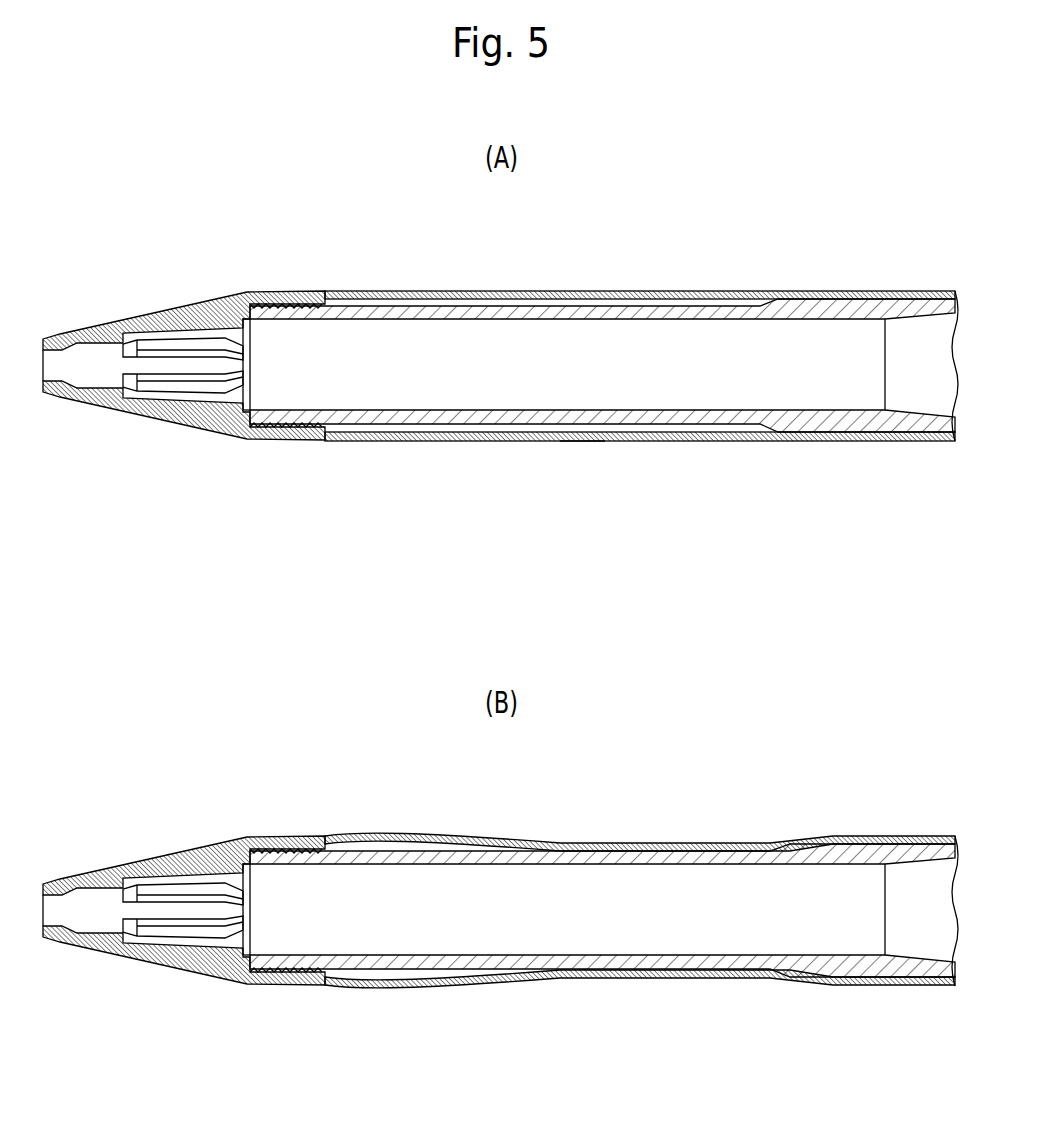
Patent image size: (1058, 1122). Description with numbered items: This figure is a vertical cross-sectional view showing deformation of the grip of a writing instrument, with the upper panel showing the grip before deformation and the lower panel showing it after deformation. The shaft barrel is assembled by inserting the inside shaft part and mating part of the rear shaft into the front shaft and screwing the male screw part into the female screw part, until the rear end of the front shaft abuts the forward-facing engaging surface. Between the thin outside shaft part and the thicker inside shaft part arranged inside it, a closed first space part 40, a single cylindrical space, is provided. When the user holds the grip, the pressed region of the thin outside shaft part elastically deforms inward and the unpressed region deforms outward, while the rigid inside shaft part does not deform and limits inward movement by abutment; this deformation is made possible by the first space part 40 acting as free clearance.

The first space part 40 is at (583, 437).